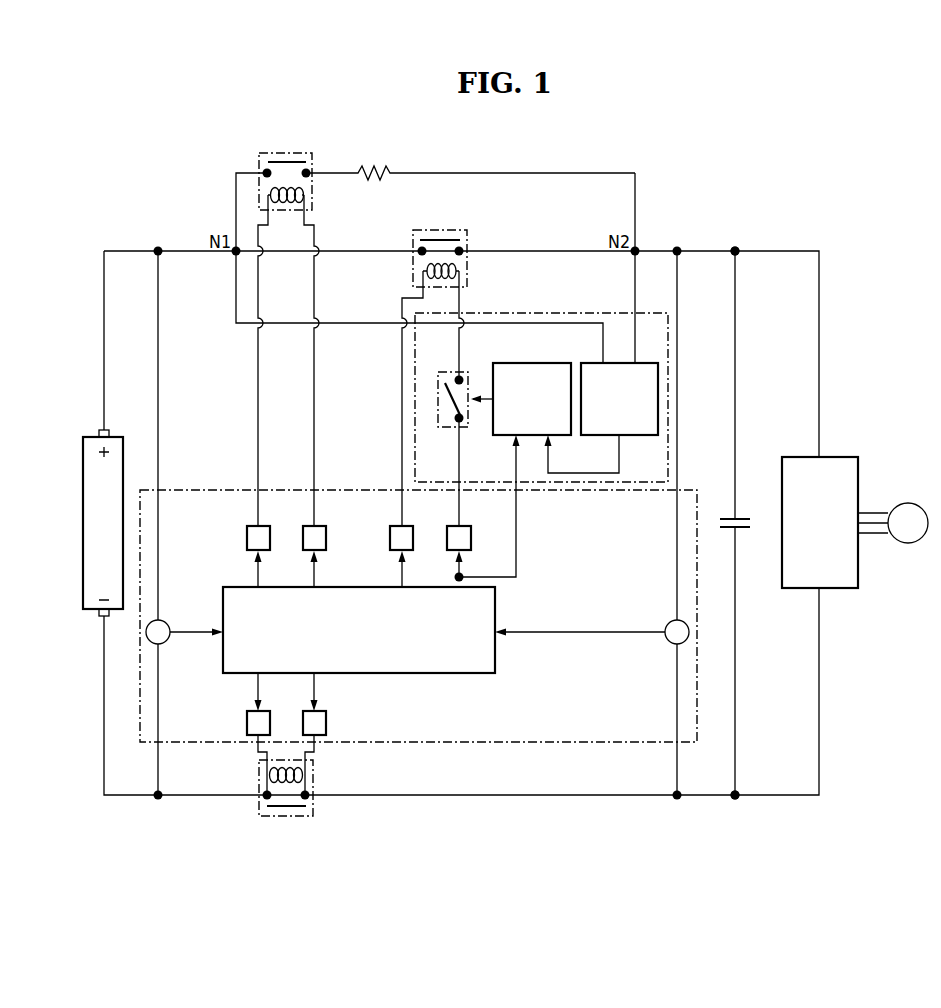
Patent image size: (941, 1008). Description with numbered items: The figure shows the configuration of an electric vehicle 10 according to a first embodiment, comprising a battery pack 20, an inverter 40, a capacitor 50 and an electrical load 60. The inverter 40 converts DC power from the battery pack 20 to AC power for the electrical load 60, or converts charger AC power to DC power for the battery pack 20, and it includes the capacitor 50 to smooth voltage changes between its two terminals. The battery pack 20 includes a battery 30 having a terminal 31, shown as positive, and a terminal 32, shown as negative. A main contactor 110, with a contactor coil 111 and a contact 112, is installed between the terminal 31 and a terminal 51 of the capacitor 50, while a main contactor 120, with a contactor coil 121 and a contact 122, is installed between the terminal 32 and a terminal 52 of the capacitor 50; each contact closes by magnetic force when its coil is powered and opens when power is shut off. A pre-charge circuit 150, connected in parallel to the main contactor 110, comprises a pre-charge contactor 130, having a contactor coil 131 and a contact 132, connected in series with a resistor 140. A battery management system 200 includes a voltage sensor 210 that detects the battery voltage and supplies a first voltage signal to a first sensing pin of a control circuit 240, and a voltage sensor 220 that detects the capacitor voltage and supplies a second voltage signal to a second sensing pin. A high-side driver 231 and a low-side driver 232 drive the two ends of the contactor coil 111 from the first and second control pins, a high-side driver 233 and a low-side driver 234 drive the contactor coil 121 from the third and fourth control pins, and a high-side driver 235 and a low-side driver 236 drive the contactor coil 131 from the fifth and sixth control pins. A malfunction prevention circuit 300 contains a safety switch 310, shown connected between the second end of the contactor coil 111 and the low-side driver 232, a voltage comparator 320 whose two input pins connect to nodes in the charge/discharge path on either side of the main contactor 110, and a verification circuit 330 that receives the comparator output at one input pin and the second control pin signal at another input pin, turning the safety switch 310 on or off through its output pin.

The electric vehicle 10 is at (133, 146).
The battery pack 20 is at (179, 211).
The battery 30 is at (83, 525).
The terminal 31 is at (98, 432).
The terminal 32 is at (98, 613).
The inverter 40 is at (840, 457).
The capacitor 50 is at (755, 512).
The terminal 51 is at (734, 249).
The terminal 52 is at (735, 798).
The electrical load 60 is at (908, 503).
The main contactor 110 is at (456, 240).
The contactor coil 111 is at (459, 278).
The contact 112 is at (432, 239).
The main contactor 120 is at (302, 807).
The contactor coil 121 is at (303, 782).
The contact 122 is at (283, 808).
The pre-charge contactor 130 is at (301, 163).
The contactor coil 131 is at (304, 195).
The contact 132 is at (272, 162).
The resistor 140 is at (373, 167).
The pre-charge circuit 150 is at (443, 158).
The battery management system 200 is at (350, 490).
The voltage sensor 210 is at (166, 643).
The voltage sensor 220 is at (668, 623).
The high-side driver 231 is at (393, 526).
The low-side driver 232 is at (450, 526).
The high-side driver 233 is at (247, 723).
The low-side driver 234 is at (326, 723).
The high-side driver 235 is at (249, 526).
The low-side driver 236 is at (305, 526).
The control circuit 240 is at (436, 673).
The malfunction prevention circuit 300 is at (541, 380).
The safety switch 310 is at (443, 379).
The voltage comparator 320 is at (643, 435).
The verification circuit 330 is at (529, 364).